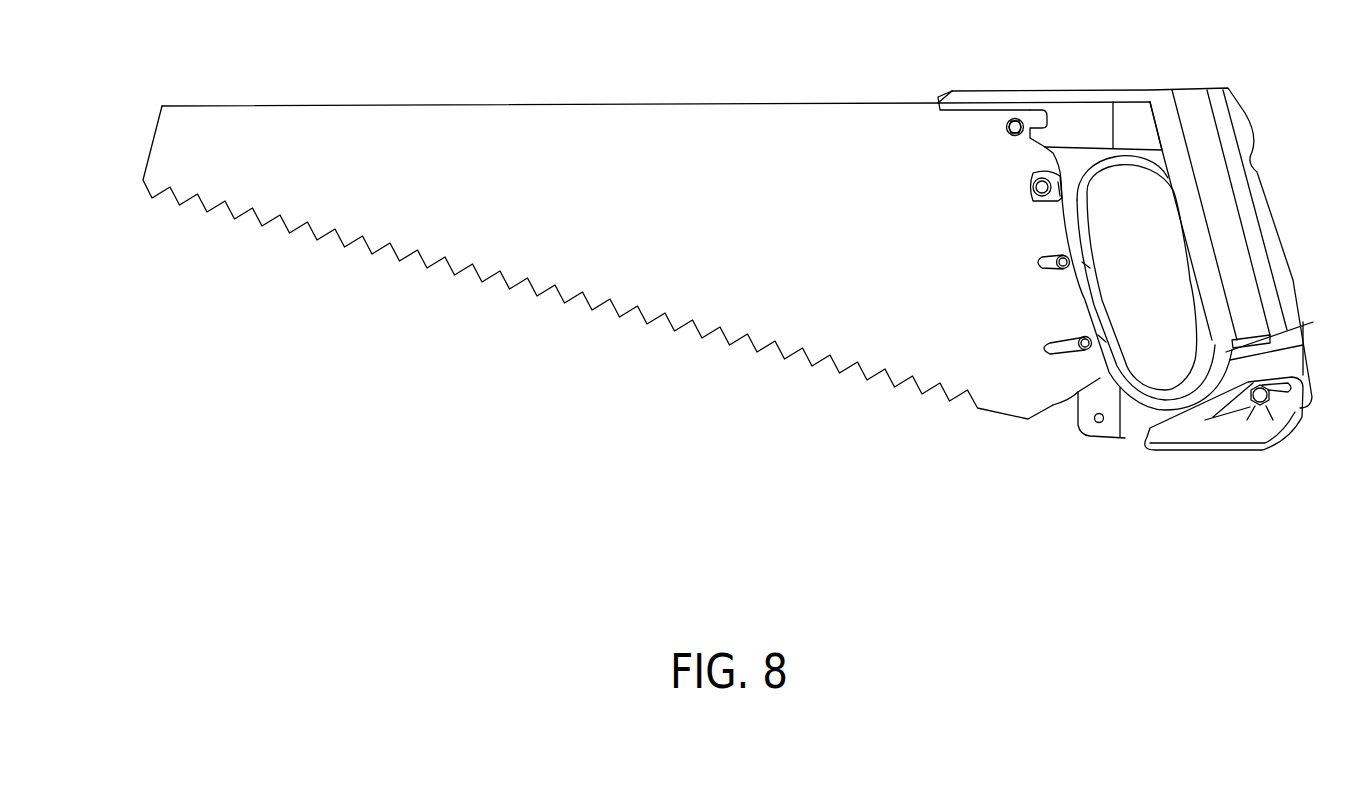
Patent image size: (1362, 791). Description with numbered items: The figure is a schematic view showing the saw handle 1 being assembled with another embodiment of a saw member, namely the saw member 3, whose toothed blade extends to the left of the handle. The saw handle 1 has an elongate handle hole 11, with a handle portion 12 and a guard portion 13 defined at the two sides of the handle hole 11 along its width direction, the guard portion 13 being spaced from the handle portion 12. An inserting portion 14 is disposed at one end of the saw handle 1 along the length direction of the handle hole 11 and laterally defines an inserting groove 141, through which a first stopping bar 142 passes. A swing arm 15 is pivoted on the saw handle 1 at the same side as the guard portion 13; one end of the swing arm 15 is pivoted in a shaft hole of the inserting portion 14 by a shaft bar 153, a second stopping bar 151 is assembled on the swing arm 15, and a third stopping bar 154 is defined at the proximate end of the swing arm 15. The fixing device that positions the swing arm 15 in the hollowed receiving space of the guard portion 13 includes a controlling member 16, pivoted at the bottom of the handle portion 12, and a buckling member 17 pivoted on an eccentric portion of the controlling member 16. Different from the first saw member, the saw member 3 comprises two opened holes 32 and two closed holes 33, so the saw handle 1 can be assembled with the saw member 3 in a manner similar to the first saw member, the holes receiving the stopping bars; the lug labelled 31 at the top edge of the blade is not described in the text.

The saw handle 1 is at (1252, 107).
The saw member 3 is at (872, 120).
The handle hole 11 is at (1122, 175).
The handle portion 12 is at (1262, 180).
The guard portion 13 is at (1082, 255).
The inserting portion 14 is at (968, 92).
The inserting groove 141 is at (1083, 115).
The first stopping bar 142 is at (1006, 131).
The swing arm 15 is at (1055, 415).
The second stopping bar 151 is at (1087, 268).
The shaft bar 153 is at (1030, 185).
The third stopping bar 154 is at (1099, 424).
The controlling member 16 is at (1255, 441).
The buckling member 17 is at (1222, 405).
The blade lug 31 is at (1048, 115).
The opened holes 32 is at (1024, 147).
The closed holes 33 is at (1040, 264).